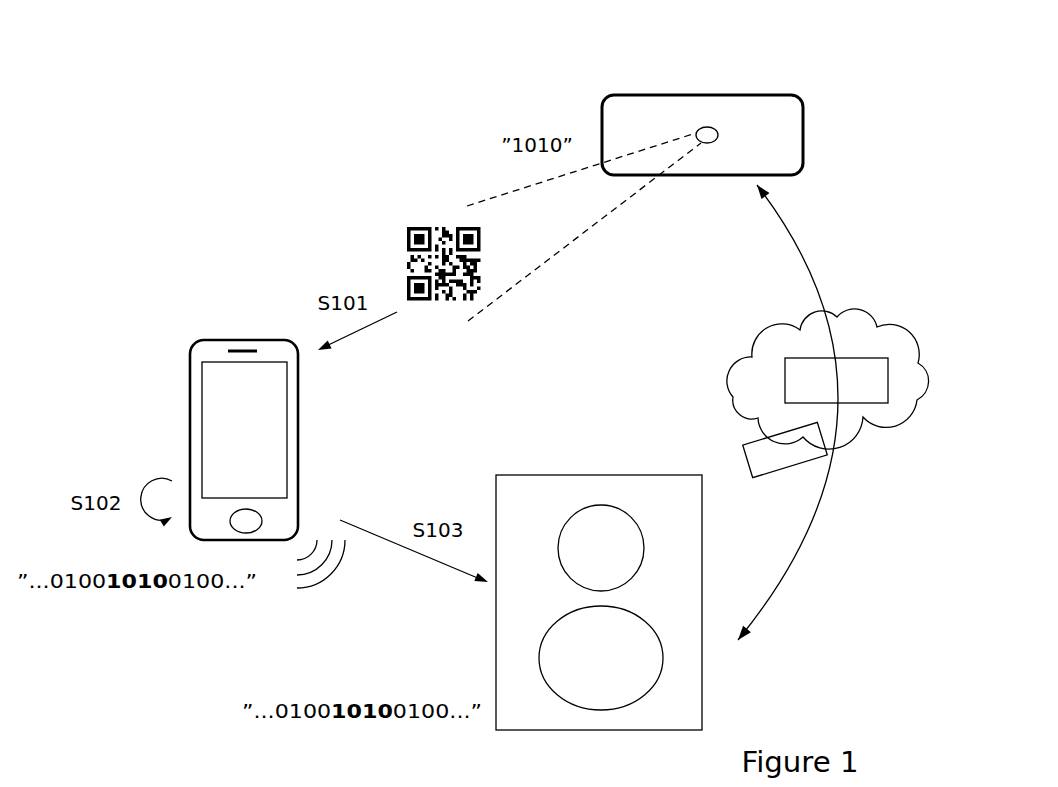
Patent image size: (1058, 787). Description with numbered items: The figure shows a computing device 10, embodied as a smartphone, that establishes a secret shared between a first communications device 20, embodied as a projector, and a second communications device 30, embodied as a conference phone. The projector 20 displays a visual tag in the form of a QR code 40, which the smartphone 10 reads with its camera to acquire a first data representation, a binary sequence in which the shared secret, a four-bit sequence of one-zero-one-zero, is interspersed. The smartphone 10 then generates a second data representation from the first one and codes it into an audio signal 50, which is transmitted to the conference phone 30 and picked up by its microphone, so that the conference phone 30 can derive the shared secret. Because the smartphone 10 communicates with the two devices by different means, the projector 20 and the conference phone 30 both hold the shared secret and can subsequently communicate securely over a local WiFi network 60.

The computing device 10 is at (238, 340).
The first communications device 20 is at (672, 95).
The second communications device 30 is at (584, 475).
The QR code 40 is at (414, 222).
The audio signal 50 is at (308, 590).
The local WiFi network 60 is at (866, 322).